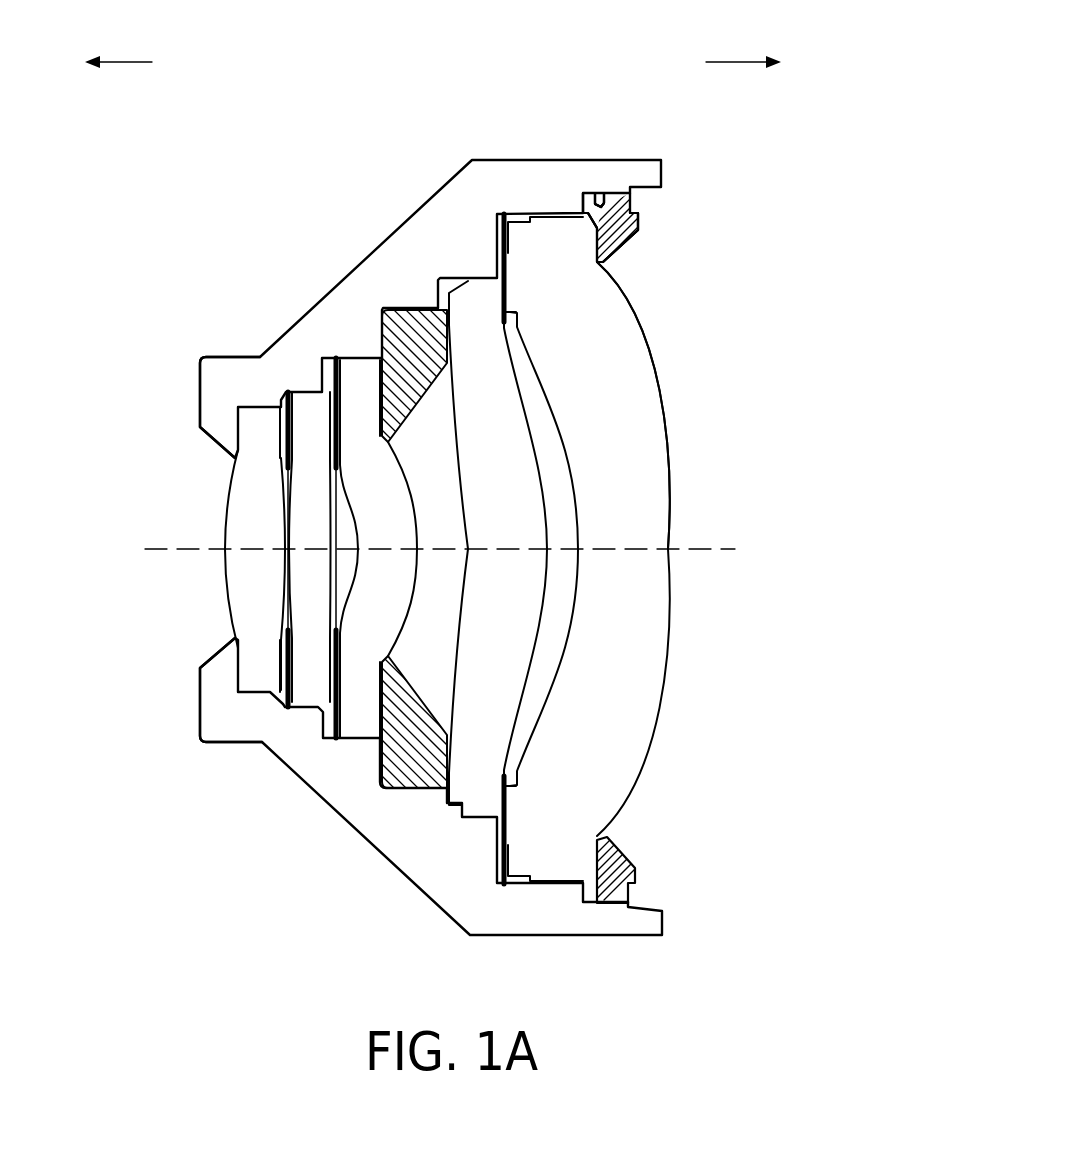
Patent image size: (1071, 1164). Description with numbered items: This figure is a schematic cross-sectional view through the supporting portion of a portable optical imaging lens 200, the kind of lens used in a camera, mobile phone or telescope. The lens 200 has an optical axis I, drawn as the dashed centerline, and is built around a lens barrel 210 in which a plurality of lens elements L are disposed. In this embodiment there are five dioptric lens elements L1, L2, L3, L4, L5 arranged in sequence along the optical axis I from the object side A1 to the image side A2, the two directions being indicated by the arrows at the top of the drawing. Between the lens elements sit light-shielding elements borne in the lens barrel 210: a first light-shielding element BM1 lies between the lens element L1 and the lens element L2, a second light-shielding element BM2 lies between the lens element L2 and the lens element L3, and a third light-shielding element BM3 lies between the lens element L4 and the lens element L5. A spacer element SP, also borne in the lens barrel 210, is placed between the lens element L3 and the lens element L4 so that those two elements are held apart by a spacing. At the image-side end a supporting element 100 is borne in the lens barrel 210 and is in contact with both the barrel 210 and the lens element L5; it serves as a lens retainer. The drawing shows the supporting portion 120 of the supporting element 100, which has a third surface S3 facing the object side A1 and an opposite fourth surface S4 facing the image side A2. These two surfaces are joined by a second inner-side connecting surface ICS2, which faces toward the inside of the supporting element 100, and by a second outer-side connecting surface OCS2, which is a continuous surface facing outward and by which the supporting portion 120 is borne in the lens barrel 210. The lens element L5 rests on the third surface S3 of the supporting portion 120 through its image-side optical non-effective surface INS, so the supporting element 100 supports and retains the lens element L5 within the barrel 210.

The portable optical imaging lens 200 is at (755, 990).
The lens barrel 210 is at (212, 392).
The supporting portion 120 is at (603, 207).
The supporting element 100 is at (610, 227).
The lens element L1 is at (255, 427).
The lens element L2 is at (305, 392).
The lens element L3 is at (357, 378).
The lens element L4 is at (470, 297).
The lens element L5 is at (537, 230).
The lens elements L is at (155, 952).
The light-shielding element BM1 is at (283, 406).
The light-shielding element BM2 is at (336, 356).
The light-shielding element BM3 is at (497, 213).
The spacer element SP is at (408, 420).
The third surface S3 is at (589, 229).
The fourth surface S4 is at (640, 219).
The second outer-side connecting surface OCS2 is at (615, 193).
The image-side optical non-effective surface INS is at (605, 238).
The second inner-side connecting surface ICS2 is at (597, 262).
The optical axis I is at (148, 548).
The object side A1 is at (118, 45).
The image side A2 is at (743, 45).